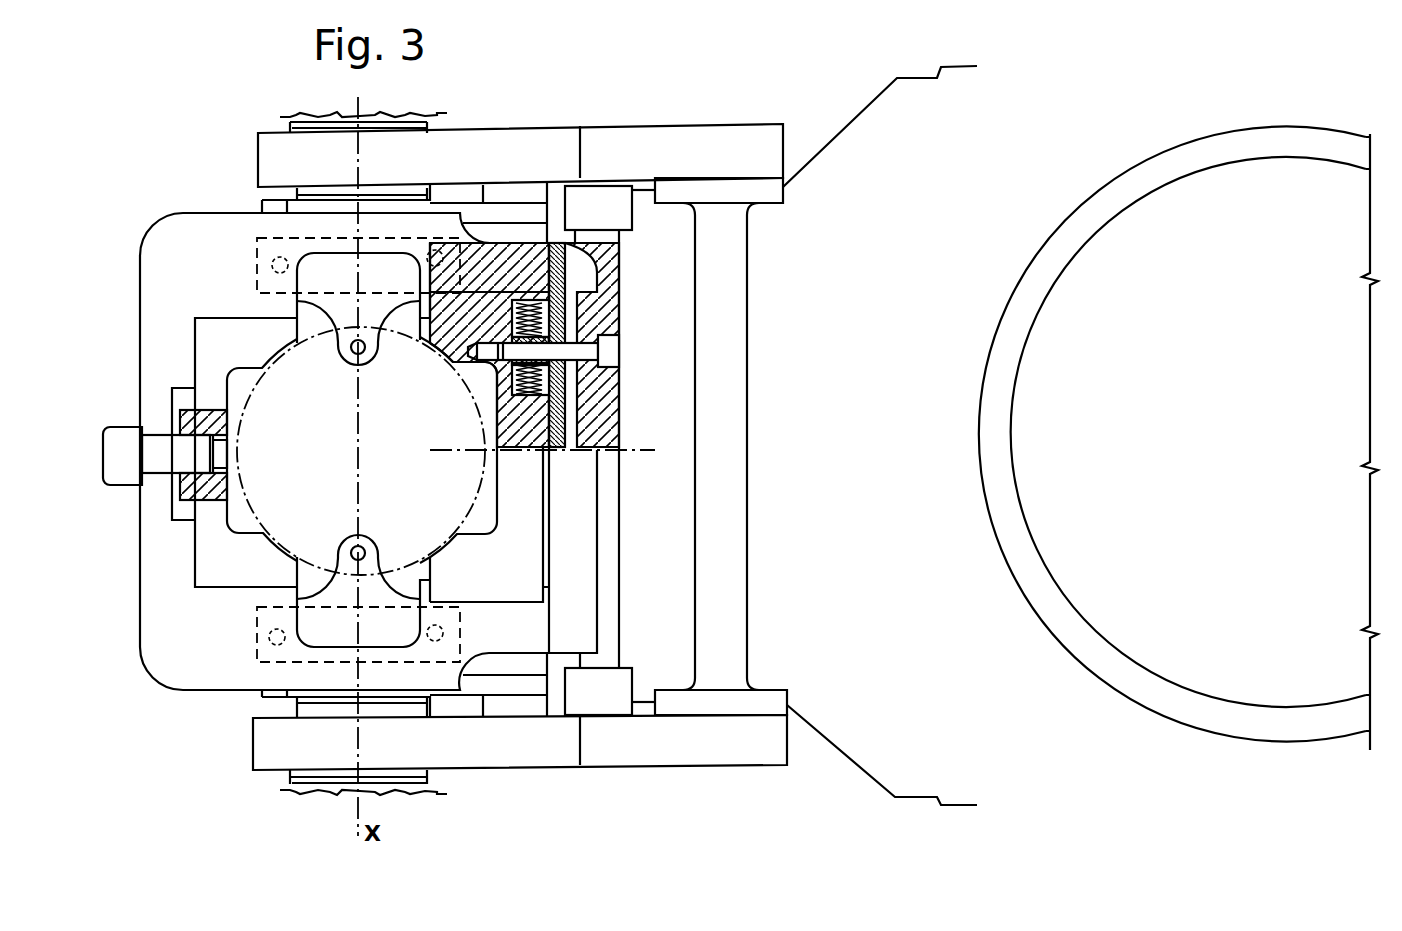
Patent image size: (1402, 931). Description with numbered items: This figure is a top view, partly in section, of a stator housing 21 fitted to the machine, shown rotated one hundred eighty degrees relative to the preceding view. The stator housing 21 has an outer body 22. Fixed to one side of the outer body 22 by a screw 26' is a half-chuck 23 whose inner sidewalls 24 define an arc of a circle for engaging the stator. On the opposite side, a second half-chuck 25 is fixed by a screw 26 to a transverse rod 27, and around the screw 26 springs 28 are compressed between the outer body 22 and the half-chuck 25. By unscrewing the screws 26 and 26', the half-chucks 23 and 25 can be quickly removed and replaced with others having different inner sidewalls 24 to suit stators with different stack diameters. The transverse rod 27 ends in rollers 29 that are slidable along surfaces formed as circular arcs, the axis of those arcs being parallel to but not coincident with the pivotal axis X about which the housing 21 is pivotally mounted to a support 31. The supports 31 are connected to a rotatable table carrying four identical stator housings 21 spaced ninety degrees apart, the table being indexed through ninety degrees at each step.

The stator housing 21 is at (150, 712).
The outer body 22 is at (178, 253).
The half-chuck 23 is at (213, 352).
The inner sidewalls 24 is at (283, 366).
The half-chuck 25 is at (527, 492).
The screw 26 is at (571, 328).
The screw 26' is at (150, 436).
The transverse rod 27 is at (610, 405).
The springs 28 is at (550, 310).
The rollers 29 is at (617, 200).
The support 31 is at (513, 143).